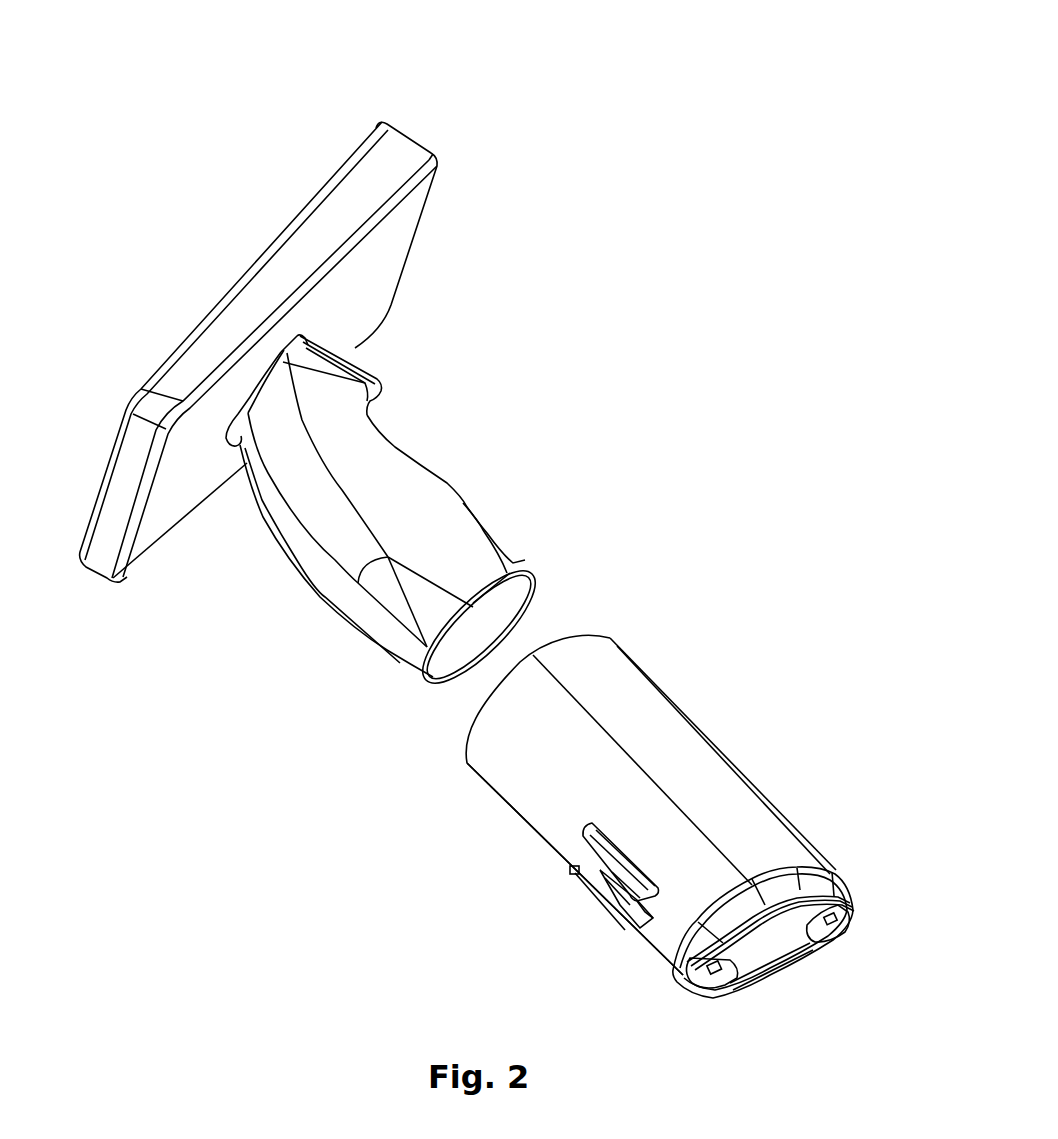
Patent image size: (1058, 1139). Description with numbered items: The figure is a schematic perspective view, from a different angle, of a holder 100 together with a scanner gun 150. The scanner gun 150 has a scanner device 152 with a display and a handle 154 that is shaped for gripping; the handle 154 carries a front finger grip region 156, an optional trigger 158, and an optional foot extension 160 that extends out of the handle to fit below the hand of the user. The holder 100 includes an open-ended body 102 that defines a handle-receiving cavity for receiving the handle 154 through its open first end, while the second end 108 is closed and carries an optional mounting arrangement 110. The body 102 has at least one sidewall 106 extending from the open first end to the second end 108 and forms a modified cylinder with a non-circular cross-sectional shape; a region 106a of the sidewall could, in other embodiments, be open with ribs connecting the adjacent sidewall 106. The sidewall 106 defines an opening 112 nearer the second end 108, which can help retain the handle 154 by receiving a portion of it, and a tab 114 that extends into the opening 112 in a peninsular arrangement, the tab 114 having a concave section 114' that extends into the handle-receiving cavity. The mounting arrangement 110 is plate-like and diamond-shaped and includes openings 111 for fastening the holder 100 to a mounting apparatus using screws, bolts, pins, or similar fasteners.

The holder 100 is at (444, 848).
The open-ended body 102 is at (690, 717).
The sidewall 106 is at (522, 785).
The region 106a is at (705, 768).
The second end 108 is at (820, 882).
The mounting arrangement 110 is at (748, 985).
The openings 111 is at (840, 920).
The opening 112 is at (637, 925).
The tab 114 is at (561, 876).
The concave section 114' is at (576, 906).
The scanner gun 150 is at (428, 90).
The scanner device 152 is at (270, 237).
The handle 154 is at (268, 530).
The front finger grip region 156 is at (437, 473).
The trigger 158 is at (378, 380).
The foot extension 160 is at (530, 565).